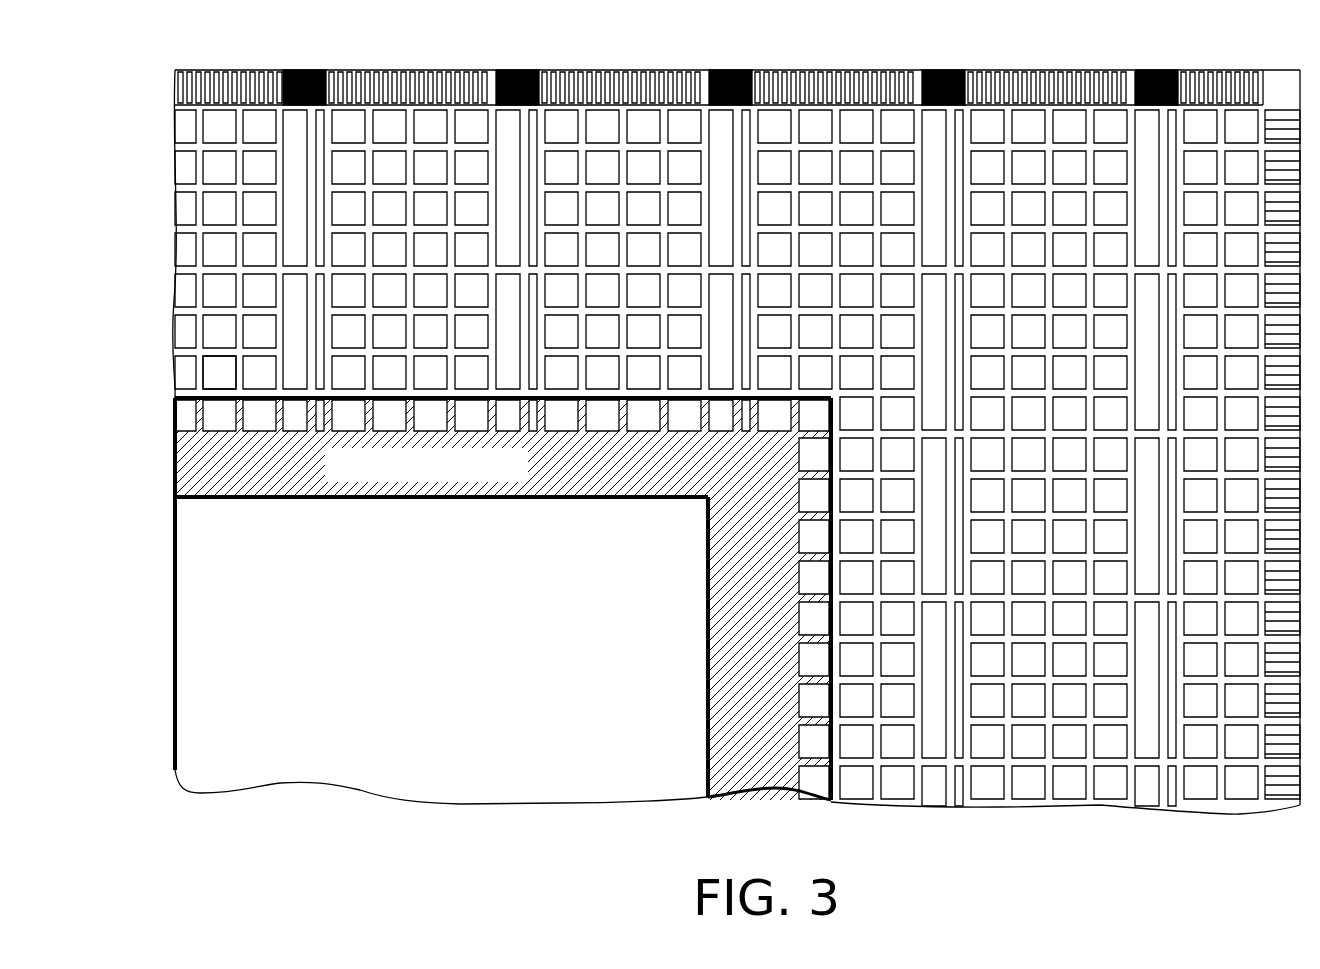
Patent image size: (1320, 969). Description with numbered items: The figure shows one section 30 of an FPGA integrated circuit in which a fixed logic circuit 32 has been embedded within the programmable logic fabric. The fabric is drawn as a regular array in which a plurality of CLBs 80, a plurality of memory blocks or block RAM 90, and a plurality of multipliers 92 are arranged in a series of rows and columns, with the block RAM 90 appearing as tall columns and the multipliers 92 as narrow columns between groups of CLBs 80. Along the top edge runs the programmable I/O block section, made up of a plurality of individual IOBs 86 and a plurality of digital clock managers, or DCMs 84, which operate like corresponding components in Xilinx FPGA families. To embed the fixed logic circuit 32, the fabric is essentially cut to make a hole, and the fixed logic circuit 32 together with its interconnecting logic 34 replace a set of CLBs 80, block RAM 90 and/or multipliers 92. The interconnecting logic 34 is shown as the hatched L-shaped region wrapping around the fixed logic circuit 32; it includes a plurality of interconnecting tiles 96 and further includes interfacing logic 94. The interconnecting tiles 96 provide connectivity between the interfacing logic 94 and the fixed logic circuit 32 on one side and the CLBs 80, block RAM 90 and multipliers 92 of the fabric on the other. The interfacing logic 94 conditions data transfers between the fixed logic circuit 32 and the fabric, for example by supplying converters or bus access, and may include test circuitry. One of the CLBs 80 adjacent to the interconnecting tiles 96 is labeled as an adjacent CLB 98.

The section 30 is at (316, 798).
The fixed logic circuit 32 is at (441, 601).
The interconnecting logic 34 is at (616, 624).
The CLB 80 is at (215, 129).
The DCM 84 is at (510, 70).
The IOB 86 is at (777, 70).
The block RAM 90 is at (935, 131).
The multiplier 92 is at (964, 131).
The interfacing logic 94 is at (503, 447).
The interconnecting tiles 96 is at (645, 432).
The adjacent CLB 98 is at (219, 373).